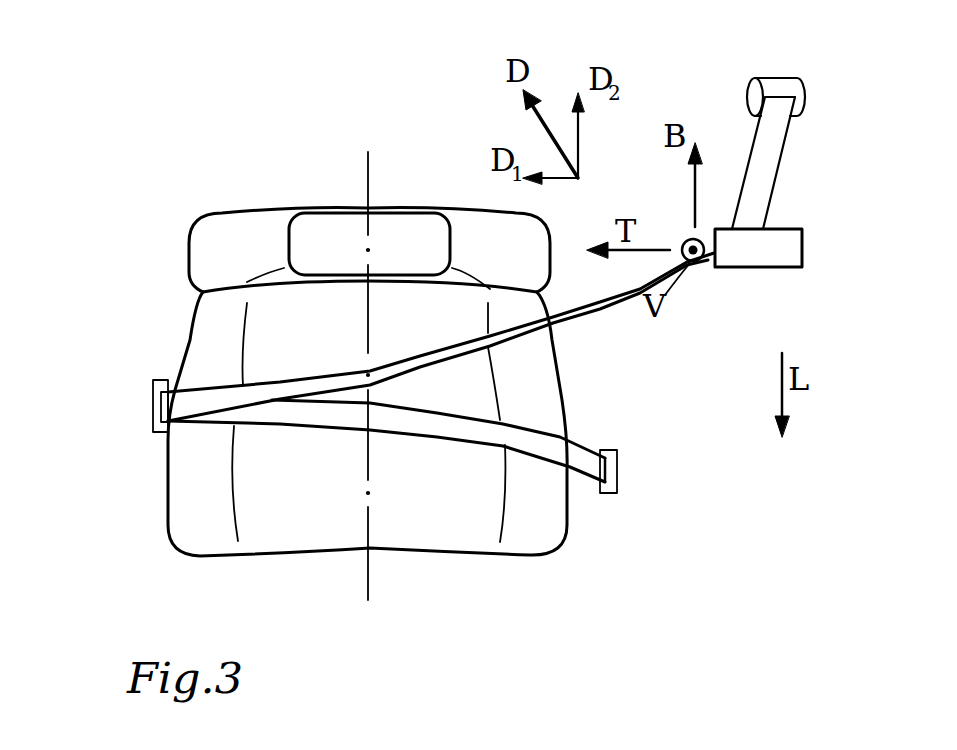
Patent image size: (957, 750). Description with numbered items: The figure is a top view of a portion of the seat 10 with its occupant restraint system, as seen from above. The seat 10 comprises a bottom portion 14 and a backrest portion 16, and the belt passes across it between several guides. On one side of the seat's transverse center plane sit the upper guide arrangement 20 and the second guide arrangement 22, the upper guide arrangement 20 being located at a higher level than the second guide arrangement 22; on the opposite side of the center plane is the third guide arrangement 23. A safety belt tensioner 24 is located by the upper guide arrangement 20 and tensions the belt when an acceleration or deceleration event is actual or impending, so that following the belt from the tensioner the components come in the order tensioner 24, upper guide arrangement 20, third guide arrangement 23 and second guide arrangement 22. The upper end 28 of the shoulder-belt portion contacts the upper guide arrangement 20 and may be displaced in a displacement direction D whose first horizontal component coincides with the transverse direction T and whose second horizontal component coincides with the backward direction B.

The seat 10 is at (132, 158).
The bottom portion 14 is at (424, 525).
The backrest portion 16 is at (217, 265).
The upper guide arrangement 20 is at (787, 242).
The second guide arrangement 22 is at (615, 478).
The third guide arrangement 23 is at (145, 410).
The safety belt tensioner 24 is at (748, 98).
The upper end of the shoulder-belt portion 28 is at (704, 272).